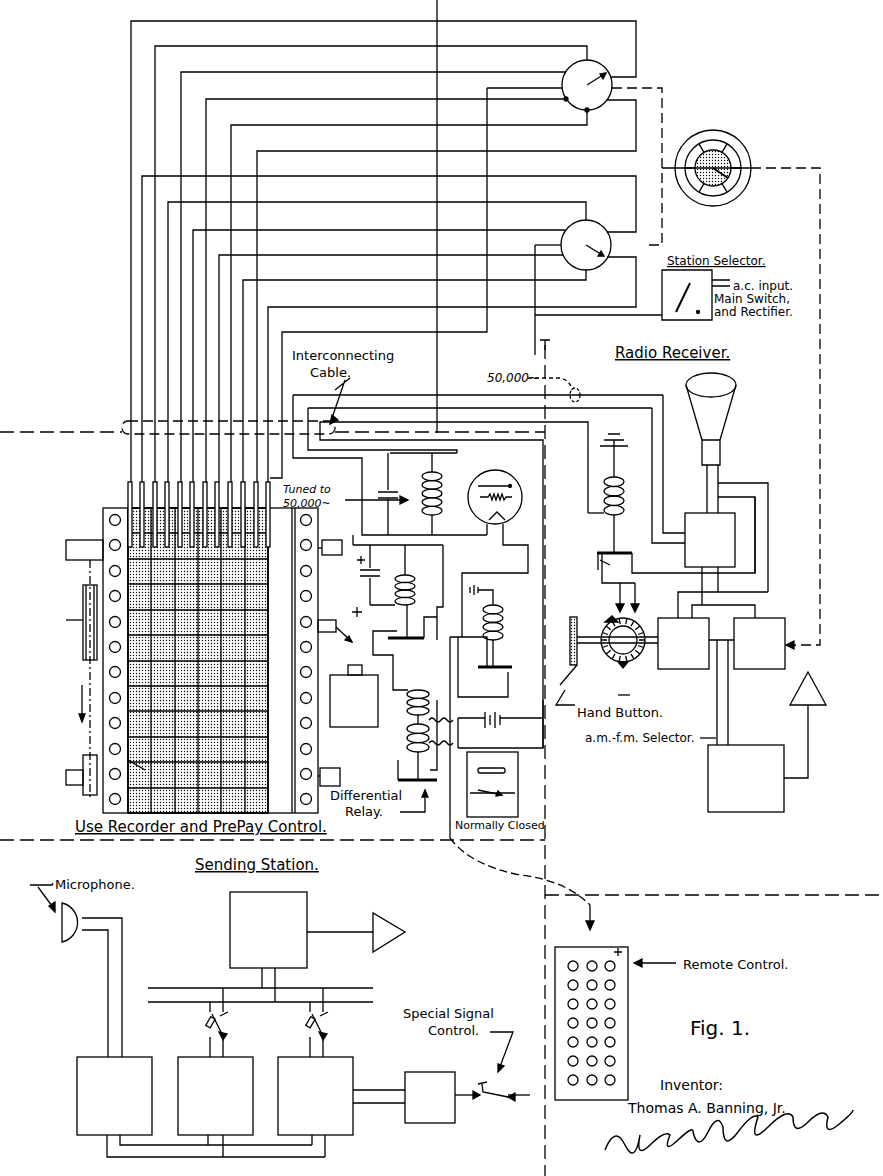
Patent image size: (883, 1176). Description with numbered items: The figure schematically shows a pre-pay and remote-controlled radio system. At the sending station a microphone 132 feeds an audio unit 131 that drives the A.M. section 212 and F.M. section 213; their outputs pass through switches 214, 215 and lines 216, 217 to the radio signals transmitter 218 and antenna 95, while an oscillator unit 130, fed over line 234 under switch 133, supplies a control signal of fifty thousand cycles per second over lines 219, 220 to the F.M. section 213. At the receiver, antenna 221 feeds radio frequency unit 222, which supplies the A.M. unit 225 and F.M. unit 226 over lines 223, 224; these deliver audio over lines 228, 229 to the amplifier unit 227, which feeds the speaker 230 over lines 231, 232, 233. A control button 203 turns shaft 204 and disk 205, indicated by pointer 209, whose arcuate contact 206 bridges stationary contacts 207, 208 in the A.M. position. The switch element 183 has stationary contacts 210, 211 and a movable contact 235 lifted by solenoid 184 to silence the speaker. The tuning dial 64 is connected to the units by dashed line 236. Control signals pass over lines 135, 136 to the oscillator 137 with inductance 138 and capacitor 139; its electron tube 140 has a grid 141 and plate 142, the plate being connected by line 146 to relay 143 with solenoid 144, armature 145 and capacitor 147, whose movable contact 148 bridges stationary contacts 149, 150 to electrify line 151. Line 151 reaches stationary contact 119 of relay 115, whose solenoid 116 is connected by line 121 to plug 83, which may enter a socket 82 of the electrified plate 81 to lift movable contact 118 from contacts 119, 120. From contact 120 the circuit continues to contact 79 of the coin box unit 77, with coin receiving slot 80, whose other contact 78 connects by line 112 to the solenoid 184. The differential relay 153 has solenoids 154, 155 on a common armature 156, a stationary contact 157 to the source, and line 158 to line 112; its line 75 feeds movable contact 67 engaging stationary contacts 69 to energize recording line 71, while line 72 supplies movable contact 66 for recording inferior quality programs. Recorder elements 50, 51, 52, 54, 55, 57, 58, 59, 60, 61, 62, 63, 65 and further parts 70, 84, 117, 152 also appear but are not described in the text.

The recorder contact 50 is at (330, 538).
The recorder contact 51 is at (329, 770).
The recorder perforations 52 is at (312, 750).
The contact 54 is at (340, 622).
The synchronous motor 55 is at (352, 672).
The record strip 57 is at (103, 545).
The record marks 58 is at (135, 780).
The strip travel guide 59 is at (90, 735).
The roller 60 is at (83, 602).
The roller 61 is at (83, 791).
The stylus pins 62 is at (128, 503).
The perforation 63 is at (312, 797).
The tuning dial 64 is at (730, 140).
The selector conductor 65 is at (668, 165).
The movable contact 66 is at (590, 250).
The movable contact 67 is at (590, 92).
The stationary contacts 69 is at (586, 112).
The conductors 70 is at (402, 182).
The line 71 is at (410, 33).
The line 72 is at (534, 291).
The line 75 is at (488, 166).
The coin box unit 77 is at (501, 784).
The contact 78 is at (498, 790).
The contact 79 is at (520, 805).
The coin receiving slot 80 is at (498, 767).
The plate 81 is at (604, 1023).
The sockets 82 is at (616, 1041).
The plug 83 is at (595, 920).
The conductor 84 is at (520, 878).
The antenna 95 is at (385, 915).
The line 112 is at (588, 454).
The relay 115 is at (502, 602).
The solenoid 116 is at (504, 620).
The armature rod 117 is at (497, 647).
The movable contact 118 is at (487, 670).
The stationary contact 119 is at (484, 680).
The stationary contact 120 is at (510, 670).
The line 121 is at (448, 814).
The oscillator unit 130 is at (413, 1072).
The audio unit 131 is at (82, 1073).
The microphone 132 is at (90, 918).
The switch 133 is at (483, 1082).
The line 135 is at (620, 390).
The line 136 is at (645, 408).
The oscillator 137 is at (406, 450).
The inductance 138 is at (443, 480).
The capacitor 139 is at (386, 490).
The electron tube 140 is at (513, 478).
The grid 141 is at (484, 500).
The plate 142 is at (496, 543).
The relay 143 is at (412, 575).
The solenoid 144 is at (398, 588).
The armature 145 is at (410, 636).
The line 146 is at (528, 560).
The capacitor 147 is at (362, 578).
The movable contact 148 is at (398, 650).
The stationary contact 149 is at (378, 631).
The stationary contact 150 is at (404, 640).
The line 151 is at (450, 635).
The relay coil 152 is at (432, 677).
The differential relay 153 is at (400, 752).
The solenoid 154 is at (420, 705).
The solenoid 155 is at (415, 740).
The common armature 156 is at (440, 748).
The stationary contact 157 is at (398, 780).
The line 158 is at (540, 748).
The switch element 183 is at (588, 575).
The solenoid 184 is at (588, 515).
The control button 203 is at (566, 628).
The shaft 204 is at (586, 672).
The disk element 205 is at (630, 695).
The arcuate contact 206 is at (609, 622).
The stationary contact 207 is at (616, 606).
The stationary contact 208 is at (635, 605).
The pointer 209 is at (630, 665).
The stationary contact 210 is at (602, 583).
The stationary contact 211 is at (632, 566).
The A.M. section 212 is at (203, 1064).
The F.M. section 213 is at (303, 1064).
The switch 214 is at (204, 1024).
The switch 215 is at (302, 1024).
The line 216 is at (245, 1002).
The line 217 is at (195, 988).
The radio signals transmitter 218 is at (230, 930).
The line 219 is at (388, 1090).
The line 220 is at (388, 1103).
The antenna 221 is at (798, 694).
The radio frequency unit 222 is at (766, 745).
The line 223 is at (729, 730).
The line 224 is at (716, 684).
The A.M. unit 225 is at (705, 638).
The F.M. unit 226 is at (772, 622).
The amplifier unit 227 is at (735, 545).
The line 228 is at (769, 588).
The line 229 is at (722, 612).
The speaker 230 is at (716, 427).
The line 231 is at (707, 497).
The line 232 is at (760, 520).
The line 233 is at (768, 500).
The line 234 is at (518, 1097).
The movable switching contact 235 is at (605, 551).
The dashed line 236 is at (820, 376).